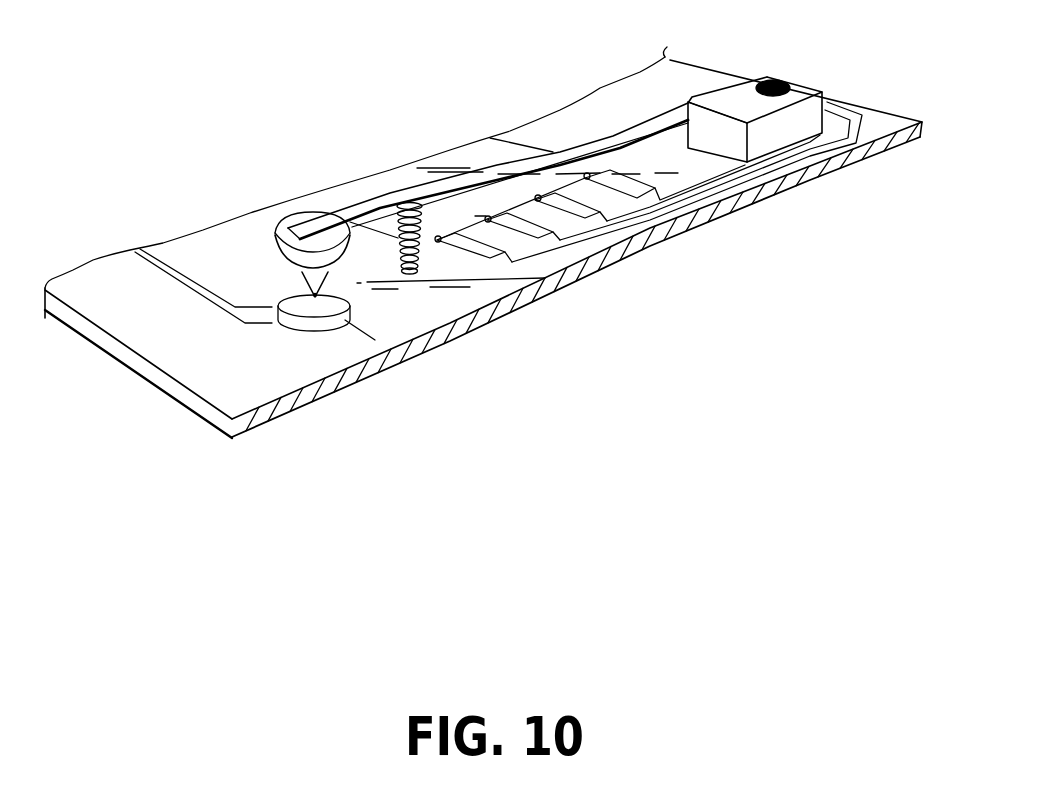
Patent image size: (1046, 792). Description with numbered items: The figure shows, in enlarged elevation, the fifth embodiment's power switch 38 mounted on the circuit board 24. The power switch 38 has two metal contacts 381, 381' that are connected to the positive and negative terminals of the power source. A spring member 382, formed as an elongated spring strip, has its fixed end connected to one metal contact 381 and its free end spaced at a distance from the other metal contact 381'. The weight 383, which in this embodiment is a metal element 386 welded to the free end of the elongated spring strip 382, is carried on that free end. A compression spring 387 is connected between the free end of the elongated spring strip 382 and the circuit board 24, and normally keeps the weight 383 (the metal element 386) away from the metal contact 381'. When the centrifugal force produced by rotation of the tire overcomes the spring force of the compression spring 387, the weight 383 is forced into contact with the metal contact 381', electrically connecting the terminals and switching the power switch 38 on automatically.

The circuit board 24 is at (120, 270).
The power switch 38 is at (378, 108).
The metal contact 381 is at (764, 91).
The metal contact 381' is at (326, 375).
The spring member 382 is at (490, 172).
The weight 383 is at (292, 212).
The metal element 386 is at (315, 284).
The compression spring 387 is at (410, 274).